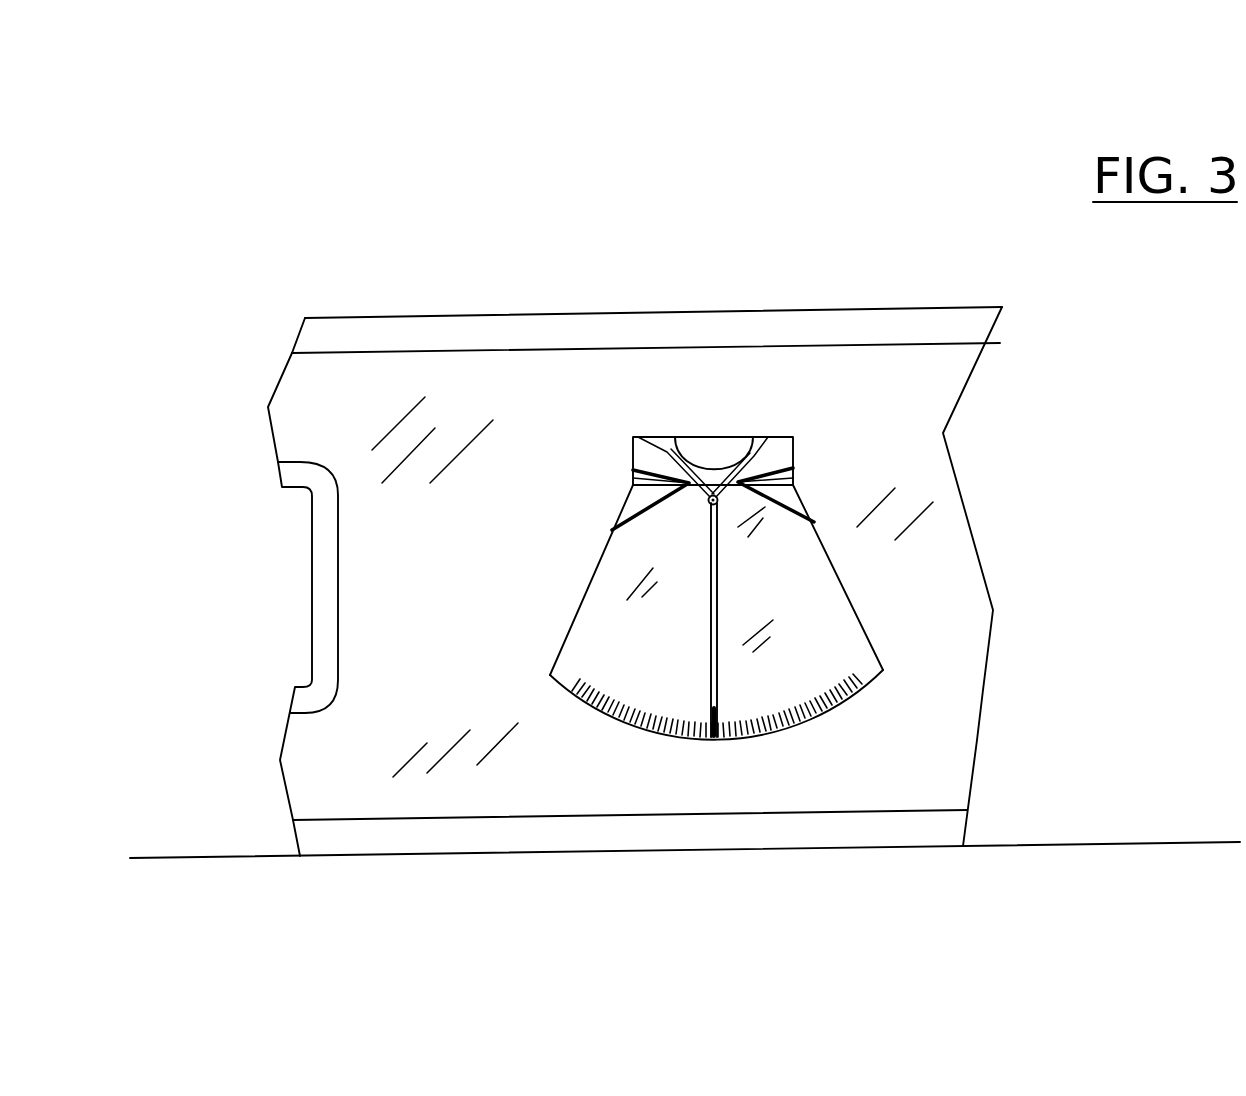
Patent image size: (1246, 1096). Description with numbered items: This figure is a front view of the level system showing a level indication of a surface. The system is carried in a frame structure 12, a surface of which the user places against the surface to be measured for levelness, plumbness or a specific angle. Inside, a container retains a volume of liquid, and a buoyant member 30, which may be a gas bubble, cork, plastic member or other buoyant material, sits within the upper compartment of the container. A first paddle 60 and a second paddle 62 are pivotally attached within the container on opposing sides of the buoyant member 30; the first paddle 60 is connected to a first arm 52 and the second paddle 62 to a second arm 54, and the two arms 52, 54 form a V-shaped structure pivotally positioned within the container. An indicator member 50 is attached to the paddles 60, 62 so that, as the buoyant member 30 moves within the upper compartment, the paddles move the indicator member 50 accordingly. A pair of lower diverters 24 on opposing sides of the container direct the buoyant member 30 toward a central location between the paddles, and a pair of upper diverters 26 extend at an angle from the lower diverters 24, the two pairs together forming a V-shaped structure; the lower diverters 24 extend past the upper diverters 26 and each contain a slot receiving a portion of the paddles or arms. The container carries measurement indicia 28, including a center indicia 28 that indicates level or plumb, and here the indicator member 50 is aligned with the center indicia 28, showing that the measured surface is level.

The frame structure 12 is at (405, 315).
The lower diverters 24 is at (797, 500).
The upper diverters 26 is at (797, 500).
The measurement indicia 28 is at (697, 727).
The buoyant member 30 is at (763, 437).
The indicator member 50 is at (715, 673).
The first arm 52 is at (760, 483).
The second arm 54 is at (633, 466).
The first paddle 60 is at (780, 437).
The second paddle 62 is at (662, 440).